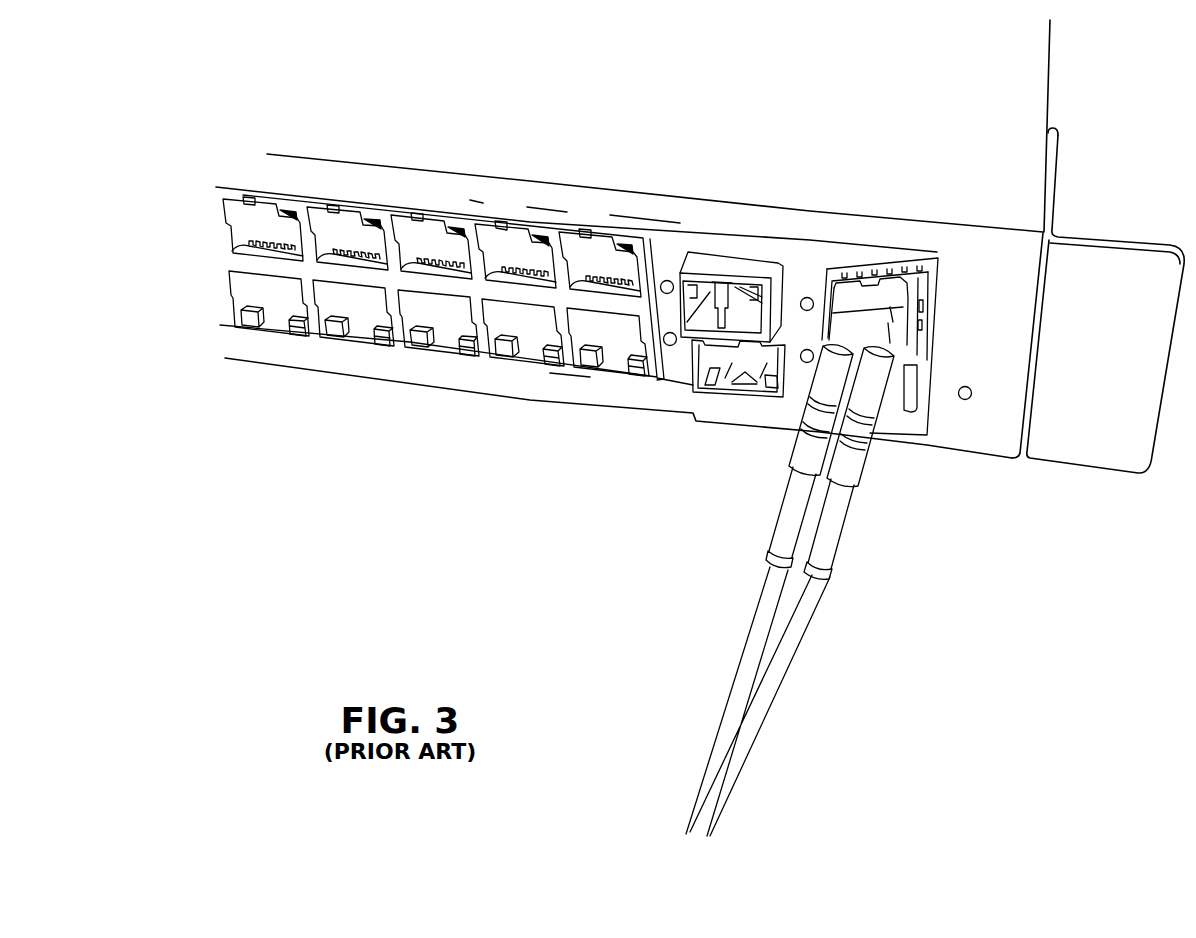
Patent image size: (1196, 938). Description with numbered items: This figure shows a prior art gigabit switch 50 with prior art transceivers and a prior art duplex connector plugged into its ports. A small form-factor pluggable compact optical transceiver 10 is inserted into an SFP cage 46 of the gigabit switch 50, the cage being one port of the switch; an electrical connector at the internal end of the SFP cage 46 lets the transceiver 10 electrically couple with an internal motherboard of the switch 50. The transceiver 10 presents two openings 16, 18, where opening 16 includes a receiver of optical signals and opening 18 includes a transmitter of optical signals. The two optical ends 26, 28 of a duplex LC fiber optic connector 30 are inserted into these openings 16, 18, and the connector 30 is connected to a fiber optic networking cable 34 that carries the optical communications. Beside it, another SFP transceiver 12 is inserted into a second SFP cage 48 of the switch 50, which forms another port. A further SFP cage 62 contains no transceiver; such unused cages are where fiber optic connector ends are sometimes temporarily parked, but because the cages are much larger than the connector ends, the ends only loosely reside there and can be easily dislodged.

The SFP compact optical transceiver 10 is at (923, 322).
The SFP transceiver 12 is at (692, 342).
The opening 16 is at (852, 283).
The opening 18 is at (907, 286).
The optical end 26 is at (830, 292).
The optical end 28 is at (922, 306).
The duplex LC fiber optic connector 30 is at (918, 352).
The fiber optic networking cable 34 is at (782, 692).
The SFP cage 46 is at (893, 268).
The SFP cage 48 is at (710, 252).
The gigabit switch 50 is at (961, 435).
The SFP cage 62 is at (712, 362).